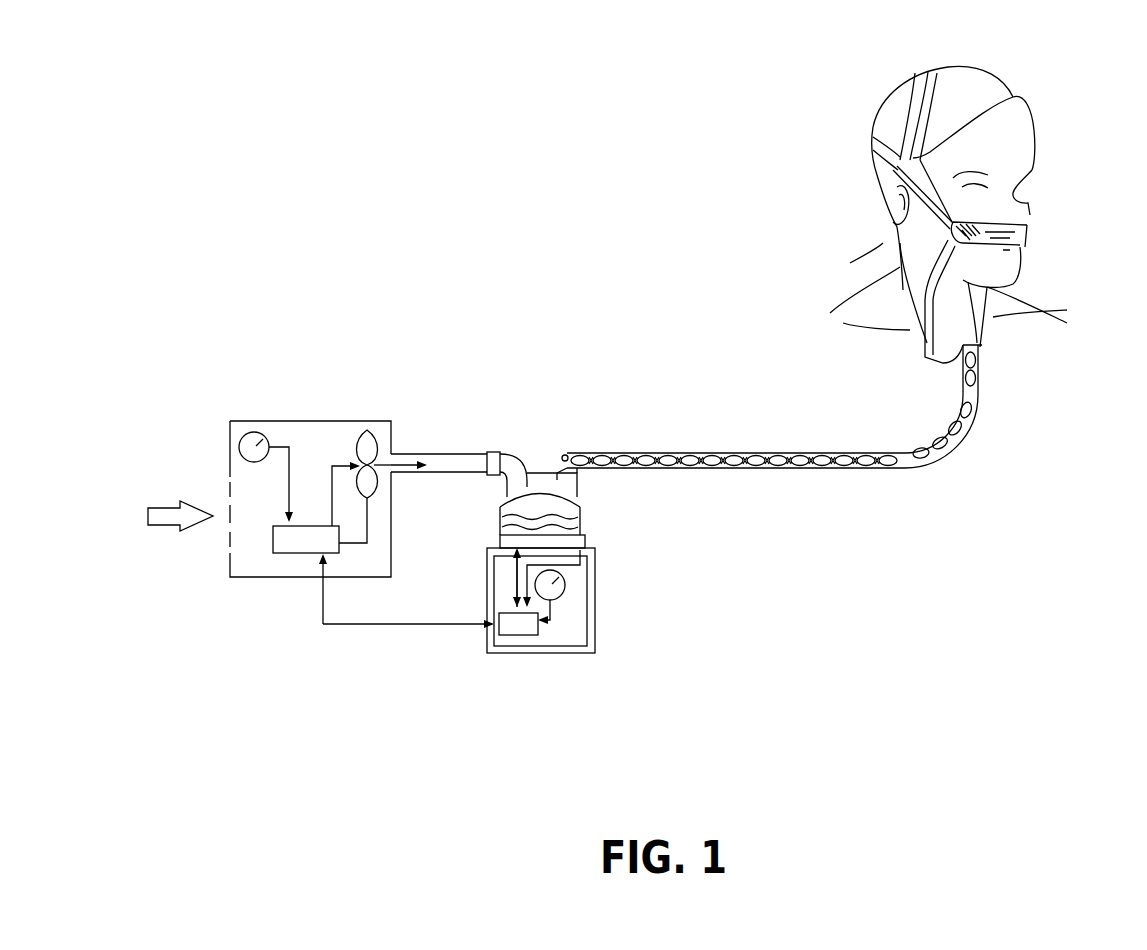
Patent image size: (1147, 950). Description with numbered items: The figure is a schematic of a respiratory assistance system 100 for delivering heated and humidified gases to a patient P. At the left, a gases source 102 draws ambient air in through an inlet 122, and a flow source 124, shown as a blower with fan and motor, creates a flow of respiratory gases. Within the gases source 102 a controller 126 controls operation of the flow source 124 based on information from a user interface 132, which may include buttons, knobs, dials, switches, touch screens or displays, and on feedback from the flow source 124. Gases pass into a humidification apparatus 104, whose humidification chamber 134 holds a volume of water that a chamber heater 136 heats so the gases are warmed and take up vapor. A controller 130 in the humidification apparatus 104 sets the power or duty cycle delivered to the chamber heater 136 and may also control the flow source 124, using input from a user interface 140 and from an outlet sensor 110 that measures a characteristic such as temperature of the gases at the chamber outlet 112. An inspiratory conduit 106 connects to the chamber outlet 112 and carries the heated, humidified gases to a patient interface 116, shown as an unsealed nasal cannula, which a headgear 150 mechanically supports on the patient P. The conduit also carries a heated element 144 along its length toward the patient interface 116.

The respiratory assistance system 100 is at (216, 71).
The gases source 102 is at (300, 484).
The humidification apparatus 104 is at (491, 628).
The inspiratory conduit 106 is at (772, 406).
The outlet sensor 110 is at (565, 456).
The chamber outlet 112 is at (588, 458).
The patient interface 116 is at (1027, 235).
The inlet 122 is at (172, 480).
The flow source 124 is at (375, 421).
The controller 126 is at (292, 553).
The controller 130 is at (520, 622).
The user interface 132 is at (243, 437).
The humidification chamber 134 is at (562, 505).
The chamber heater 136 is at (490, 542).
The user interface 140 is at (553, 593).
The heated tube 144 is at (647, 458).
The headgear 150 is at (873, 140).
The patient P is at (939, 206).